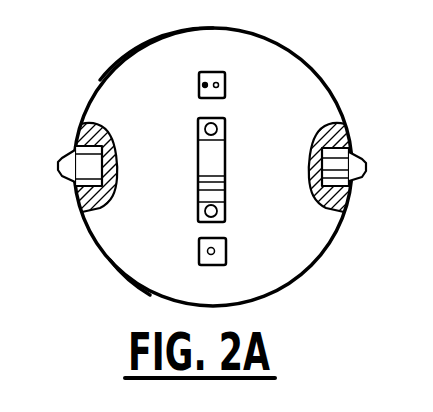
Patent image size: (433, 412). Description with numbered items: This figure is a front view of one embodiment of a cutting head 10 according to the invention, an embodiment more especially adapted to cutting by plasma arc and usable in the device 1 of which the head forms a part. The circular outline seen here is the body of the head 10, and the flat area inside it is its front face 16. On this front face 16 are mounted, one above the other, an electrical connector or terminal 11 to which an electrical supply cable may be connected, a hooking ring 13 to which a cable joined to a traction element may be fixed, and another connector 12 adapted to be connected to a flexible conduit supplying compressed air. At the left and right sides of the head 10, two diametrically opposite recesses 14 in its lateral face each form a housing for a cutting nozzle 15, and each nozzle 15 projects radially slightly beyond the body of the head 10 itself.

The display device 1 is at (100, 68).
The cutting head 10 is at (316, 258).
The electrical connector 11 is at (225, 78).
The connector 12 is at (222, 251).
The hooking ring 13 is at (205, 178).
The recess 14 is at (339, 146).
The cutting nozzle 15 is at (72, 152).
The front face 16 is at (143, 258).